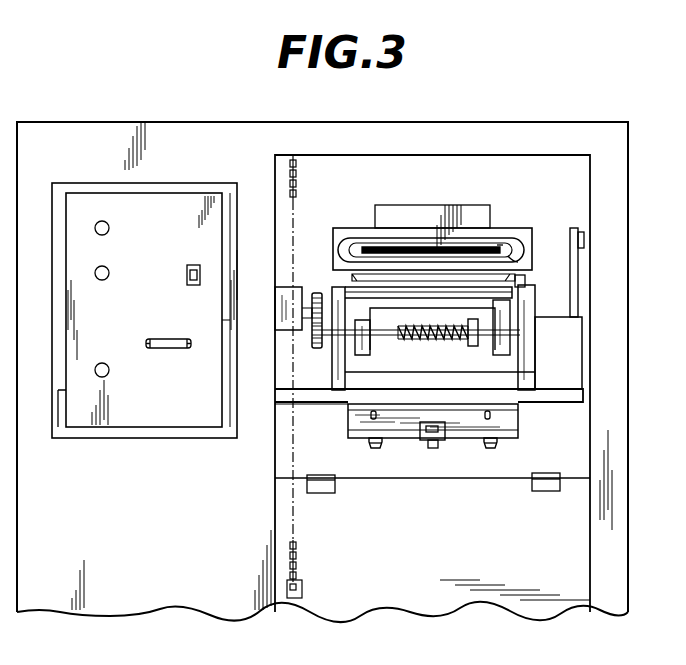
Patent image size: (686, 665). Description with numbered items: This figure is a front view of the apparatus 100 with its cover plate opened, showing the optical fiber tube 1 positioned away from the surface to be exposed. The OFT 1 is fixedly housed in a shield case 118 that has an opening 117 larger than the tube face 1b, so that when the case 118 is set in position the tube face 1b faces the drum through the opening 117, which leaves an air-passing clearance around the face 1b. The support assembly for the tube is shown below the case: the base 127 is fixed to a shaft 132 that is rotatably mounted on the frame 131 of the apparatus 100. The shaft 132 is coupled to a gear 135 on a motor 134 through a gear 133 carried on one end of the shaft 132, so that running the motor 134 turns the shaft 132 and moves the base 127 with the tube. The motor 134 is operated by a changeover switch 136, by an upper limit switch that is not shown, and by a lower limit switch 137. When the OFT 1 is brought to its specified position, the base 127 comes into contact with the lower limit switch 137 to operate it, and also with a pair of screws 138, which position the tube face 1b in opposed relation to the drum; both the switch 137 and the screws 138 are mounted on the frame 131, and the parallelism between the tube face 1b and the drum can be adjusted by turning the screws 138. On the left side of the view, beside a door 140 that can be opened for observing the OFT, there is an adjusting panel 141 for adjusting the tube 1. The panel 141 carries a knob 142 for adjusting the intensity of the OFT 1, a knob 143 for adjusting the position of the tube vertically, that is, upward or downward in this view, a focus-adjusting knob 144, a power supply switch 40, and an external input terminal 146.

The apparatus 100 is at (518, 118).
The door 140 is at (422, 596).
The adjusting panel 141 is at (152, 415).
The knob 142 is at (109, 228).
The knob 143 is at (109, 273).
The focus-adjusting knob 144 is at (108, 375).
The power supply switch 40 is at (200, 278).
The external input terminal 146 is at (178, 348).
The motor 134 is at (278, 318).
The gear 135 is at (317, 292).
The gear 133 is at (315, 352).
The shaft 132 is at (382, 336).
The base 127 is at (490, 322).
The opening 117 is at (500, 244).
The shield case 118 is at (525, 236).
The optical fiber tube 1 is at (514, 249).
The tube face 1b is at (514, 259).
The changeover switch 136 is at (584, 240).
The frame 131 is at (577, 398).
The lower limit switch 137 is at (431, 447).
The screws 138 is at (378, 448).